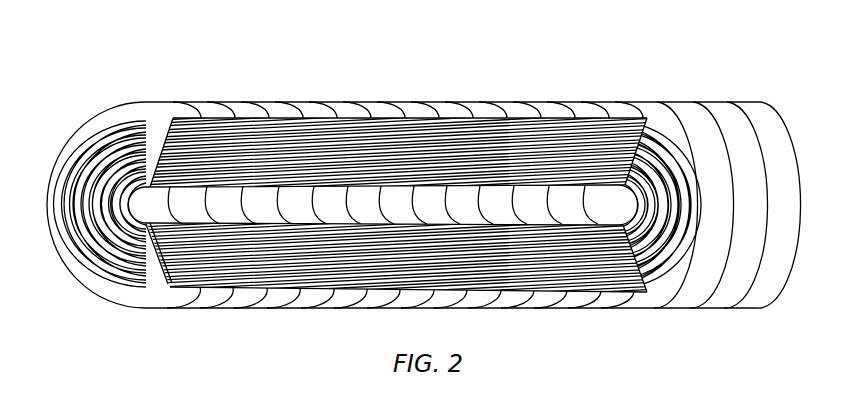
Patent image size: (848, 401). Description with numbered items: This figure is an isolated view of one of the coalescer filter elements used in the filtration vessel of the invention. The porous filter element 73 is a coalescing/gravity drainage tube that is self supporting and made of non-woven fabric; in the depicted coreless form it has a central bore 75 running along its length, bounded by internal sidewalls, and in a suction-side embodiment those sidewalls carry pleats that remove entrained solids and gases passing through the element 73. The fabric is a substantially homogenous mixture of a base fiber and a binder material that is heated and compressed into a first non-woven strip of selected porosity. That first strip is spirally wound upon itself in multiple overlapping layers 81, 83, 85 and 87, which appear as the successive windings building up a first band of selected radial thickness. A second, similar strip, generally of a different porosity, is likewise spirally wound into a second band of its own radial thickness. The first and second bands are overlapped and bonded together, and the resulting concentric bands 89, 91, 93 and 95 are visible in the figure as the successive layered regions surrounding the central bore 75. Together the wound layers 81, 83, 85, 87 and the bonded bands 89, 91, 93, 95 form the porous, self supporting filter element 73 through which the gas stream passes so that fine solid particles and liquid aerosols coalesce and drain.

The porous filter element 73 is at (536, 56).
The central bore 75 is at (122, 203).
The overlapping layer 81 is at (263, 118).
The overlapping layer 83 is at (362, 147).
The overlapping layer 85 is at (447, 153).
The overlapping layer 87 is at (523, 135).
The band 89 is at (147, 230).
The band 91 is at (150, 248).
The band 93 is at (157, 268).
The band 95 is at (165, 283).